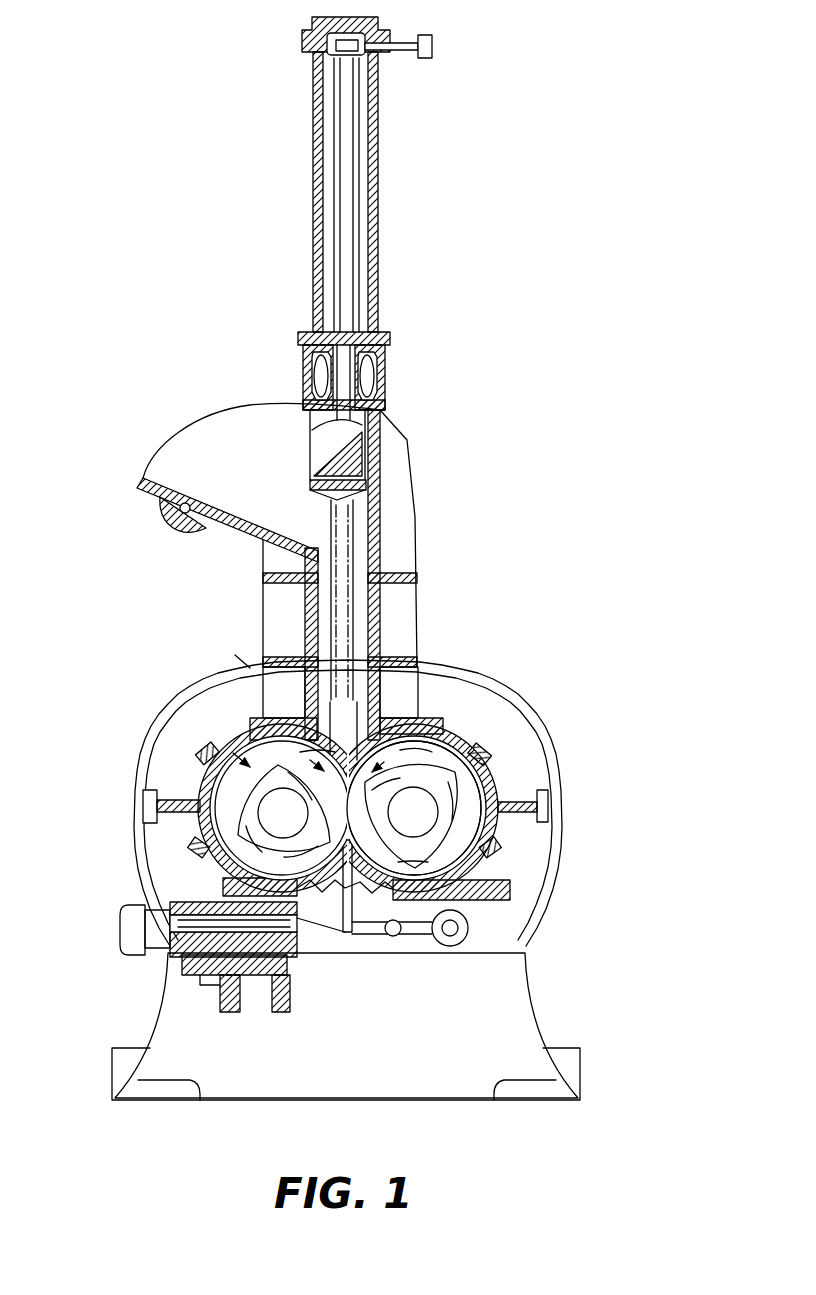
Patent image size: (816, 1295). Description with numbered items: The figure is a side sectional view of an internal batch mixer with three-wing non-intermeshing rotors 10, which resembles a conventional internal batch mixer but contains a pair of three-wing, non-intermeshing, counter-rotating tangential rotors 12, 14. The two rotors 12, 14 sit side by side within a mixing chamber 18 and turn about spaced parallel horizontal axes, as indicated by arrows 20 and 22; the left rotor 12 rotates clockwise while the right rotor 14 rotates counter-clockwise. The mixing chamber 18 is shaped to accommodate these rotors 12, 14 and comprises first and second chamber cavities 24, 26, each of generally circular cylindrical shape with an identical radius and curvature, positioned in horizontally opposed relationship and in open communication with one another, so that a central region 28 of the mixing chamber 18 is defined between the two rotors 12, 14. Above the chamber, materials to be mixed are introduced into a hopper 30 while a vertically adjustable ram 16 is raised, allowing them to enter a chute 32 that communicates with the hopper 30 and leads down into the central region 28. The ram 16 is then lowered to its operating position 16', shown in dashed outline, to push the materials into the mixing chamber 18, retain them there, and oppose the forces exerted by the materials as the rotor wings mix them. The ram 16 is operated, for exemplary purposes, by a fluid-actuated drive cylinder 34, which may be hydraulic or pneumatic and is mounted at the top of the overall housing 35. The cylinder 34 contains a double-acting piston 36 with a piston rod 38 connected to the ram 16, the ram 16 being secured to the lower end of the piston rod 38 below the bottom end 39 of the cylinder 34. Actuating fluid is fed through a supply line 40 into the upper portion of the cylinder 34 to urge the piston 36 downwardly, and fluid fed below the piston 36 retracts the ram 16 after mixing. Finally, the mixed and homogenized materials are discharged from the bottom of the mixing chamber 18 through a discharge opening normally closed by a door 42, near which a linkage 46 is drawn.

The internal batch mixer with three-wing non-intermeshing rotors 10 is at (80, 606).
The left rotor 12 is at (240, 800).
The right rotor 14 is at (447, 837).
The vertically adjustable ram 16 is at (386, 455).
The lowered operating position of the ram 16' is at (424, 692).
The mixing chamber 18 is at (247, 795).
The arrow indicating rotation of left rotor 20 is at (252, 745).
The arrow indicating rotation of right rotor 22 is at (447, 720).
The first chamber cavity 24 is at (223, 863).
The second chamber cavity 26 is at (458, 795).
The central region 28 is at (380, 760).
The hopper 30 is at (207, 430).
The chute 32 is at (352, 567).
The fluid-actuated drive cylinder 34 is at (380, 154).
The overall housing 35 is at (240, 666).
The double-acting piston 36 is at (355, 60).
The piston rod 38 is at (355, 180).
The bottom end of the cylinder 39 is at (386, 360).
The supply line 40 is at (403, 33).
The door 42 is at (367, 917).
The linkage 46 is at (470, 928).